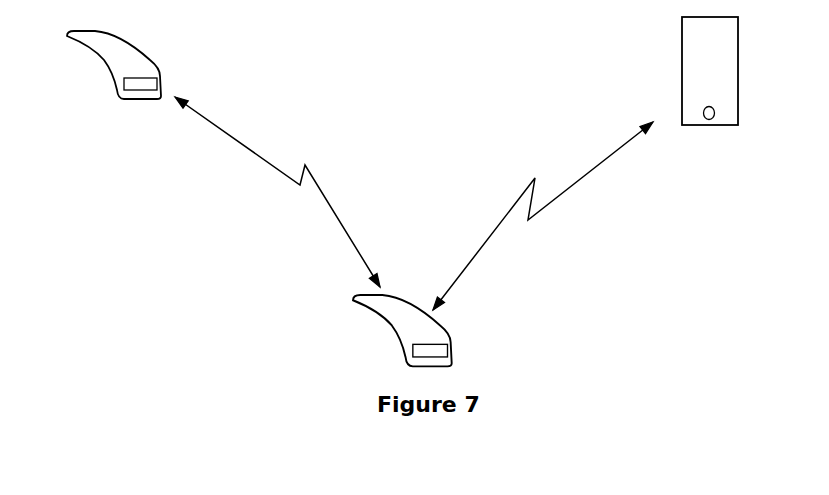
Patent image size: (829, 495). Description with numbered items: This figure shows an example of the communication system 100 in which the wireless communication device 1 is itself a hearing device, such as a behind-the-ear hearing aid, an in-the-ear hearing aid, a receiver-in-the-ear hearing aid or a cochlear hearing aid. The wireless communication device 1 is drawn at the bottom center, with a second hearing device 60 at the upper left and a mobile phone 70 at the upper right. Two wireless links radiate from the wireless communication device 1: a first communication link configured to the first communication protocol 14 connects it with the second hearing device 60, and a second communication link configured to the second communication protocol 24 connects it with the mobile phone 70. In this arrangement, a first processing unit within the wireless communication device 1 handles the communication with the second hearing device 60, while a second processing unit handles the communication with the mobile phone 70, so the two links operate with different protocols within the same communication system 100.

The wireless communication device 1 is at (392, 358).
The first communication protocol 14 is at (267, 173).
The second communication protocol 24 is at (600, 168).
The hearing device 60 is at (127, 107).
The mobile phone 70 is at (682, 67).
The communication system 100 is at (173, 272).